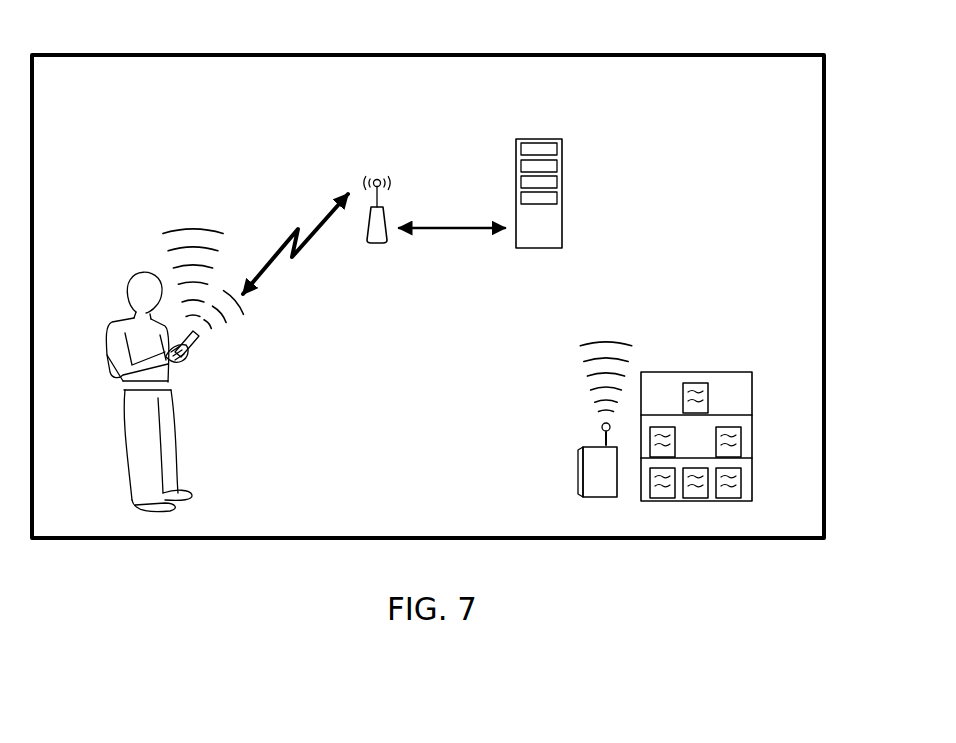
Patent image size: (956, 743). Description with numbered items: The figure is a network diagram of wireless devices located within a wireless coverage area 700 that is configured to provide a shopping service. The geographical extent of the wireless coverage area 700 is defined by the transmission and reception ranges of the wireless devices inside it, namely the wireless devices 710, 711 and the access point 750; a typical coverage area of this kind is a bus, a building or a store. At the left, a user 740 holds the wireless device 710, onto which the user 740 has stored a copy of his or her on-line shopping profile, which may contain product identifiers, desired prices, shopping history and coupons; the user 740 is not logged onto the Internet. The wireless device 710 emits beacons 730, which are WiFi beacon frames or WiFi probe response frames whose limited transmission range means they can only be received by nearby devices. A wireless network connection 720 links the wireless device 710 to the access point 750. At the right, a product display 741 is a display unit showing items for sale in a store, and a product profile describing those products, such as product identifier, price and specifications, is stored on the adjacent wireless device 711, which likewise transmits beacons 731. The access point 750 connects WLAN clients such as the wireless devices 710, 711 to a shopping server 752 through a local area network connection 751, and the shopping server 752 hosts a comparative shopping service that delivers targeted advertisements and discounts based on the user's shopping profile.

The wireless coverage area 700 is at (730, 53).
The wireless device 710 is at (197, 338).
The wireless device 711 is at (582, 478).
The wireless network connection 720 is at (280, 247).
The beacon 730 is at (153, 243).
The beacon 731 is at (572, 352).
The user 740 is at (112, 323).
The product display 741 is at (727, 372).
The access point 750 is at (365, 229).
The local area network connection 751 is at (437, 228).
The shopping server 752 is at (548, 139).